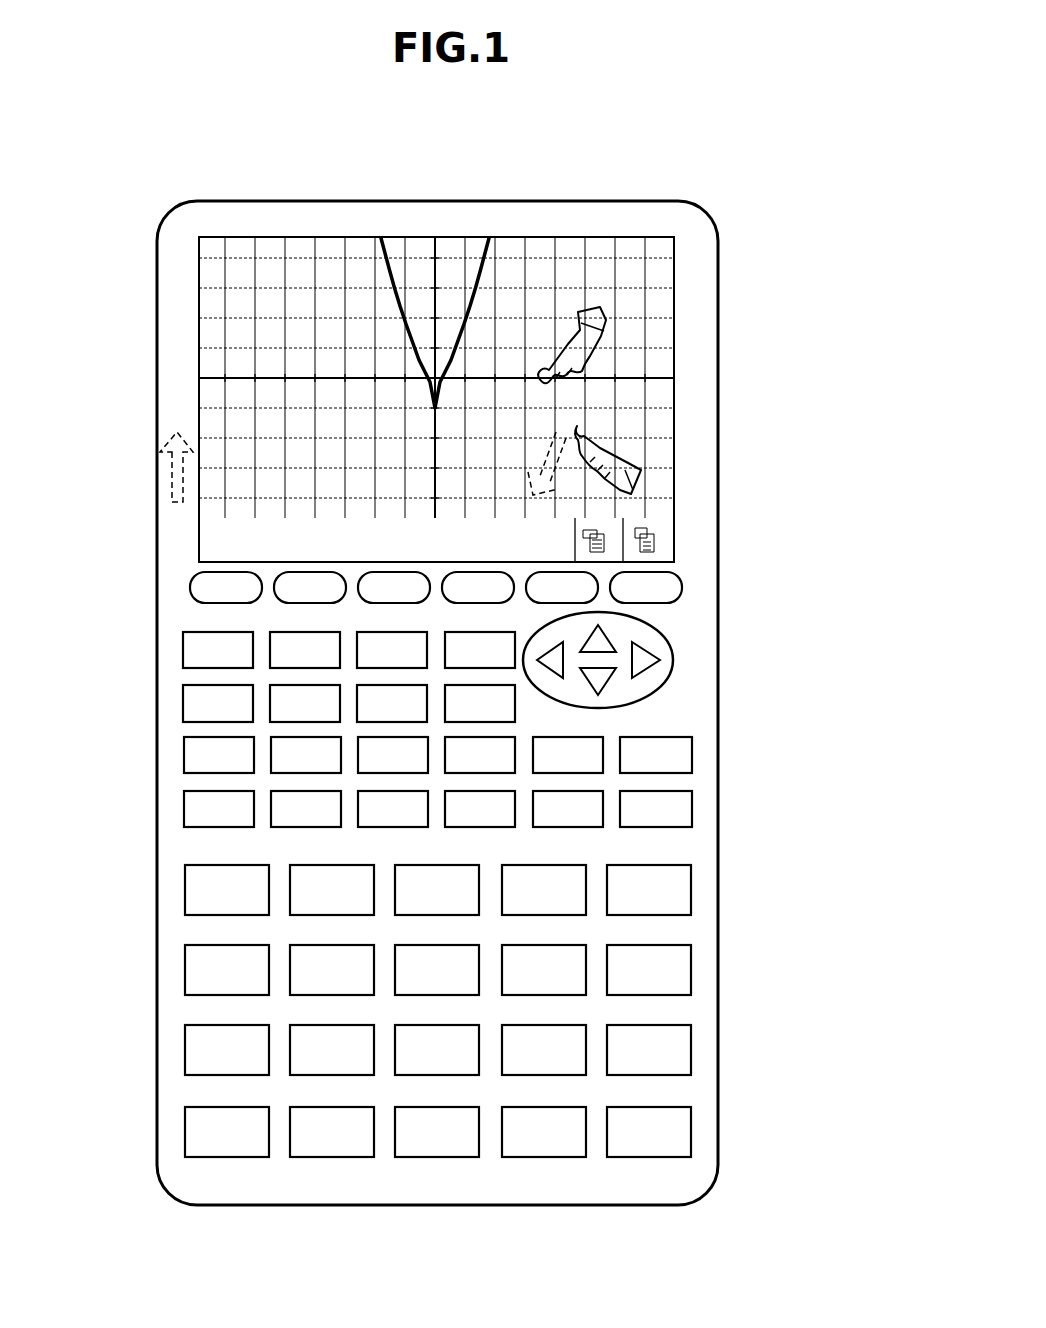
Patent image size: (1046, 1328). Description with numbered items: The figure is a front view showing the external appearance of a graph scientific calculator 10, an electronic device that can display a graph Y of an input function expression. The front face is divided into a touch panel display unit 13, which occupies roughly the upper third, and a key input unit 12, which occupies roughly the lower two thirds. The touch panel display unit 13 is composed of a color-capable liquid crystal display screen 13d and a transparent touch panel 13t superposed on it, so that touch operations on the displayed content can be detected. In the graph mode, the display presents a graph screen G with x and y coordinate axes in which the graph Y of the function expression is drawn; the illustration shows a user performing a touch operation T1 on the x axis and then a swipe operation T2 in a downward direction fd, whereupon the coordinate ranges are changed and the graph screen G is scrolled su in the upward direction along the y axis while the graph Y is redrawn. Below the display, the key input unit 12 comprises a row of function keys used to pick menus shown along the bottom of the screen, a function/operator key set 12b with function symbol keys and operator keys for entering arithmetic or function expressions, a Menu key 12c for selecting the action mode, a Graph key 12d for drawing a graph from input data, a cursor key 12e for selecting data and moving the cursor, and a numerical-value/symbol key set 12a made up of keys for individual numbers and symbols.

The graph scientific calculator 10 is at (531, 168).
The key input unit 12 is at (447, 866).
The numerical-value/symbol key set 12a is at (145, 863).
The function/operator key set 12b is at (727, 623).
The Menu key 12c is at (446, 634).
The Graph key 12d is at (278, 691).
The cursor key 12e is at (645, 633).
The touch panel display unit 13 is at (462, 360).
The liquid crystal display screen 13d is at (438, 360).
The transparent touch panel 13t is at (663, 416).
The graph screen G is at (208, 305).
The graph Y is at (388, 279).
The touch operation T1 is at (592, 325).
The swipe operation T2 is at (640, 452).
The scrolling in the upward direction su is at (178, 462).
The downward direction fd is at (645, 513).